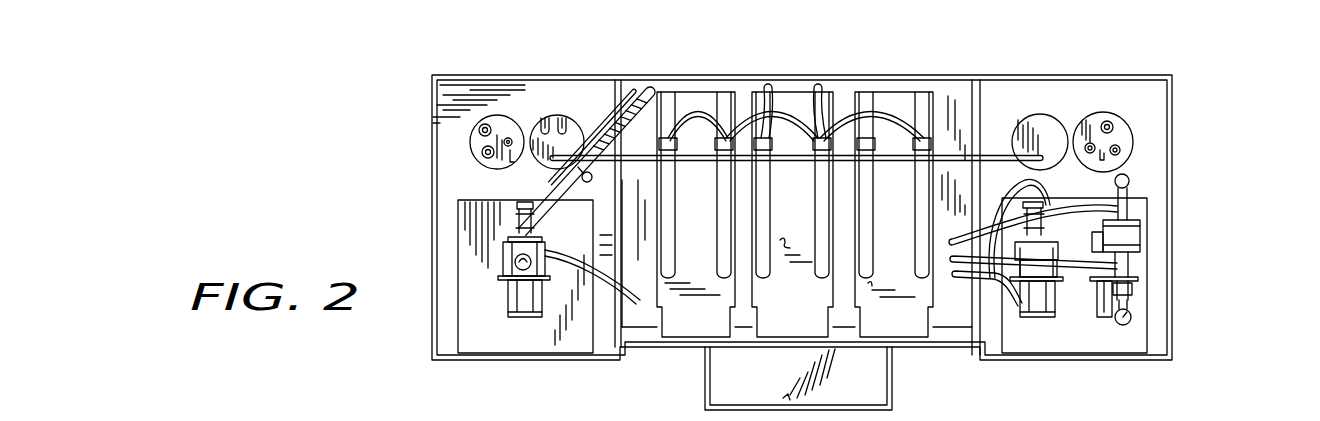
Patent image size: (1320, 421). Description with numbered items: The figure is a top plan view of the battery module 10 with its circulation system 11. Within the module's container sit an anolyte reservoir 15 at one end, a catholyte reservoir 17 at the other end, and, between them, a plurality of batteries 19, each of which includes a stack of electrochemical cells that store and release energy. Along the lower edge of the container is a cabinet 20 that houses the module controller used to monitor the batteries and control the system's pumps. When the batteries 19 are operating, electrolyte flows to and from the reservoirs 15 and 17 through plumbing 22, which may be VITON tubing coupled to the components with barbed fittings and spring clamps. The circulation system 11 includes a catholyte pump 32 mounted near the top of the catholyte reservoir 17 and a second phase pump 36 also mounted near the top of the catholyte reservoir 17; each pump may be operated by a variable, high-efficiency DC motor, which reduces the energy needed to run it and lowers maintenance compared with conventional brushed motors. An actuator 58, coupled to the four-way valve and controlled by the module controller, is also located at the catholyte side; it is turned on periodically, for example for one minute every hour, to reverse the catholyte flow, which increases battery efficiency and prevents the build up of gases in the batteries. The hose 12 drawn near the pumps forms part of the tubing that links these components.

The battery module 10 is at (703, 43).
The circulation system 11 is at (475, 283).
The hose 12 is at (1028, 188).
The anolyte reservoir 15 is at (446, 170).
The catholyte reservoir 17 is at (1150, 145).
The batteries 19 is at (797, 210).
The cabinet 20 is at (882, 395).
The plumbing 22 is at (637, 100).
The catholyte pump 32 is at (1110, 337).
The second phase pump 36 is at (1031, 330).
The actuator 58 is at (1135, 330).